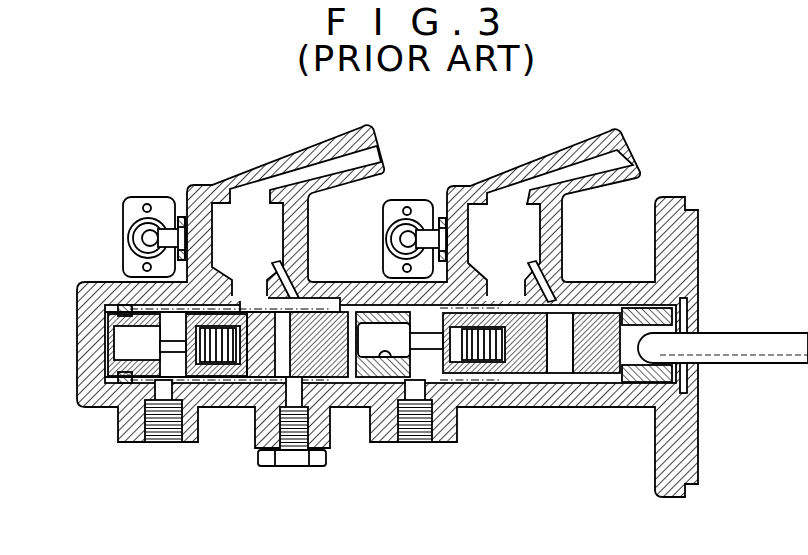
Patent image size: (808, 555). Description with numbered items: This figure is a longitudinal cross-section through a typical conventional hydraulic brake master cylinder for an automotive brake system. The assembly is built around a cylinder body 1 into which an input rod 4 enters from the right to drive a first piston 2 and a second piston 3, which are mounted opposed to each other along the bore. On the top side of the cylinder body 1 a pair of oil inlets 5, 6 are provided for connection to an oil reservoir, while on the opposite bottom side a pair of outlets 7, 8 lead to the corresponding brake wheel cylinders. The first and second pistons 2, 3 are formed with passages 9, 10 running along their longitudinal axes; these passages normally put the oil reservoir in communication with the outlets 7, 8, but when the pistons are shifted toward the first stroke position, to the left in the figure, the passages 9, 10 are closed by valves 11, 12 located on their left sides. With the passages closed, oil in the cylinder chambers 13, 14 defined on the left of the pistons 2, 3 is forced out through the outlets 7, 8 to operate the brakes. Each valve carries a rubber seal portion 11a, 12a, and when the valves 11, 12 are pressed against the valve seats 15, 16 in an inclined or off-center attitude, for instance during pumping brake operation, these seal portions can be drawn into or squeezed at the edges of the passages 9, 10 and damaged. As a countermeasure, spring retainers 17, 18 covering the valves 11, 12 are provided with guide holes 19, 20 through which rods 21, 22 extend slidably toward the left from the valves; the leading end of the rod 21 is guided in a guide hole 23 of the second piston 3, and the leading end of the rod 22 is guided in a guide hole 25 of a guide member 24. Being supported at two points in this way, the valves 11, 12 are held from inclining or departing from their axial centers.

The cylinder body 1 is at (527, 383).
The first piston 2 is at (592, 378).
The second piston 3 is at (364, 410).
The input rod 4 is at (751, 357).
The oil inlet 5 is at (625, 150).
The oil inlet 6 is at (372, 147).
The outlet 7 is at (424, 420).
The outlet 8 is at (177, 418).
The passage 9 is at (548, 346).
The passage 10 is at (285, 467).
The valve 11 is at (481, 373).
The rubber seal portion 11a is at (492, 373).
The valve 12 is at (213, 380).
The rubber seal portion 12a is at (221, 368).
The cylinder chamber 13 is at (397, 373).
The cylinder chamber 14 is at (106, 398).
The valve seat 15 is at (489, 305).
The valve seat 16 is at (226, 305).
The spring retainer 17 is at (453, 373).
The spring retainer 18 is at (200, 365).
The guide hole 19 is at (436, 320).
The guide hole 20 is at (173, 335).
The rod 21 is at (412, 330).
The rod 22 is at (150, 306).
The guide hole 23 is at (388, 378).
The guide member 24 is at (108, 362).
The guide hole 25 is at (110, 340).